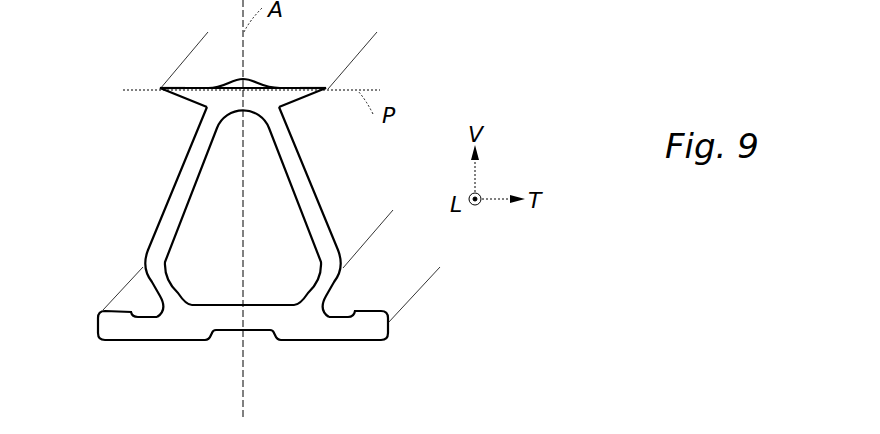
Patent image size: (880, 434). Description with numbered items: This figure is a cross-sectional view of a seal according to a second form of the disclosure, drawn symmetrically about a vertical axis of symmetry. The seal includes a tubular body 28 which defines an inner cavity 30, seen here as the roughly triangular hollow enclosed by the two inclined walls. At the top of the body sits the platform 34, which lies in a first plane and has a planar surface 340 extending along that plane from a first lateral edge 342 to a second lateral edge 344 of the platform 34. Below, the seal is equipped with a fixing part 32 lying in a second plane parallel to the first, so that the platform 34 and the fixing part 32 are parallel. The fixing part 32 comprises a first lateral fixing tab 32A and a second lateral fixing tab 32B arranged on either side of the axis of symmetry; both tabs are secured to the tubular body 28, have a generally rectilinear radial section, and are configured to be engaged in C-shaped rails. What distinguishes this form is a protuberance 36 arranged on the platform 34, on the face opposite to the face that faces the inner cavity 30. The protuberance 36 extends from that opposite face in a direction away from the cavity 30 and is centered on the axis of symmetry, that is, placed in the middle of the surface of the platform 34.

The tubular body 28 is at (300, 172).
The inner cavity 30 is at (278, 213).
The fixing part 32 is at (305, 347).
The first lateral fixing tab 32A is at (113, 328).
The second lateral fixing tab 32B is at (370, 330).
The platform 34 is at (297, 72).
The planar surface 340 is at (253, 84).
The first lateral edge 342 is at (158, 87).
The second lateral edge 344 is at (330, 88).
The protuberance 36 is at (237, 80).